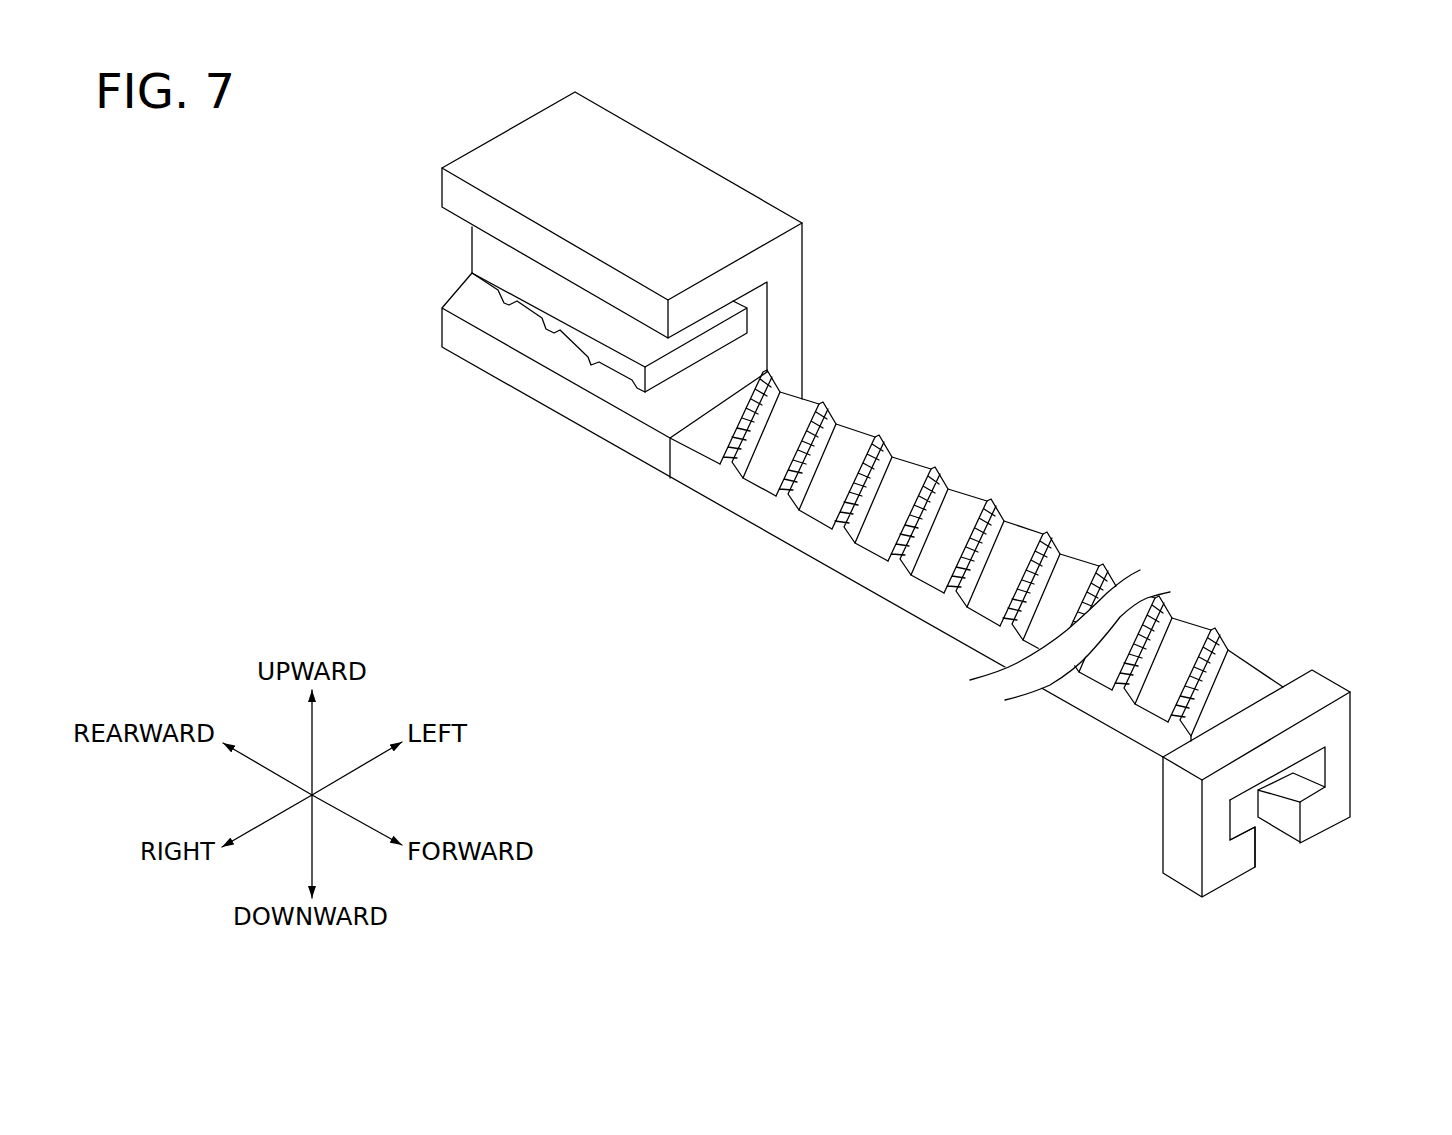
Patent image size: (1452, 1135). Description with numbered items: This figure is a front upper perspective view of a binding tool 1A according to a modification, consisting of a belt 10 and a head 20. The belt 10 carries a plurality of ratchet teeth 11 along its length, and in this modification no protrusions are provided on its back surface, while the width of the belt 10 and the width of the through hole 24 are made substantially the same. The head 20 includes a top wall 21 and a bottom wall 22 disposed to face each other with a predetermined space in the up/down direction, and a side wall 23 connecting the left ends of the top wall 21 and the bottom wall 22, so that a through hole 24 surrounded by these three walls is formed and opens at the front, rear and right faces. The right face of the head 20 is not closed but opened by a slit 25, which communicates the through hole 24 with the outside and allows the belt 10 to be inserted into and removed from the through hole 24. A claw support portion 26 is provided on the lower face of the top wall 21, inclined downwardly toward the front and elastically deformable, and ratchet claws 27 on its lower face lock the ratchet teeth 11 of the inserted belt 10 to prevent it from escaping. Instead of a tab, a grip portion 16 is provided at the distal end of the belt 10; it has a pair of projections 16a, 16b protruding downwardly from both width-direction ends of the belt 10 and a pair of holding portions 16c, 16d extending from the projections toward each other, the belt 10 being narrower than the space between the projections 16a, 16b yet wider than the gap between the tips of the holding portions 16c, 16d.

The binding tool 1A is at (1104, 226).
The belt 10 is at (1078, 460).
The ratchet teeth 11 is at (988, 498).
The grip portion 16 is at (1377, 681).
The projection 16a is at (1184, 830).
The projection 16b is at (1340, 752).
The holding portion 16c is at (1238, 862).
The holding portion 16d is at (1328, 815).
The head 20 is at (725, 118).
The top wall 21 is at (508, 140).
The bottom wall 22 is at (600, 416).
The side wall 23 is at (794, 289).
The through hole 24 is at (706, 407).
The slit 25 is at (429, 207).
The claw support portion 26 is at (631, 393).
The ratchet claws 27 is at (592, 361).